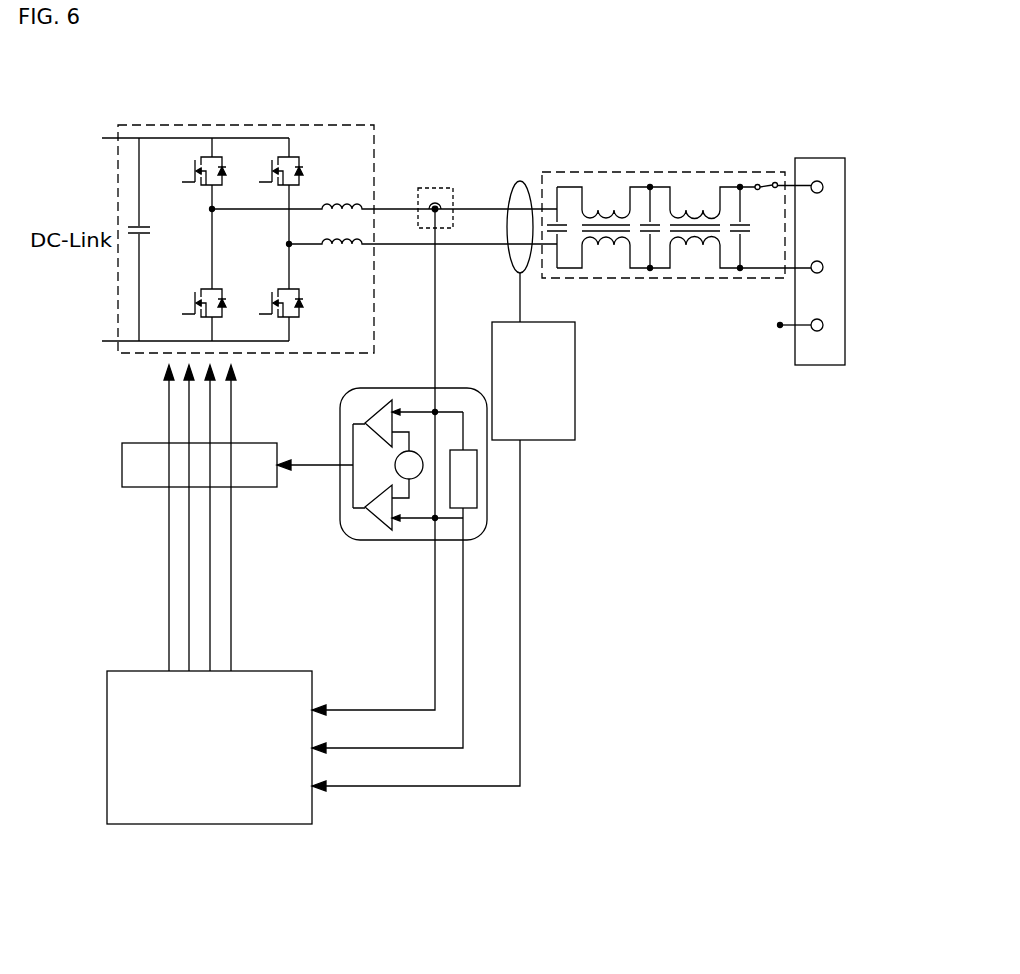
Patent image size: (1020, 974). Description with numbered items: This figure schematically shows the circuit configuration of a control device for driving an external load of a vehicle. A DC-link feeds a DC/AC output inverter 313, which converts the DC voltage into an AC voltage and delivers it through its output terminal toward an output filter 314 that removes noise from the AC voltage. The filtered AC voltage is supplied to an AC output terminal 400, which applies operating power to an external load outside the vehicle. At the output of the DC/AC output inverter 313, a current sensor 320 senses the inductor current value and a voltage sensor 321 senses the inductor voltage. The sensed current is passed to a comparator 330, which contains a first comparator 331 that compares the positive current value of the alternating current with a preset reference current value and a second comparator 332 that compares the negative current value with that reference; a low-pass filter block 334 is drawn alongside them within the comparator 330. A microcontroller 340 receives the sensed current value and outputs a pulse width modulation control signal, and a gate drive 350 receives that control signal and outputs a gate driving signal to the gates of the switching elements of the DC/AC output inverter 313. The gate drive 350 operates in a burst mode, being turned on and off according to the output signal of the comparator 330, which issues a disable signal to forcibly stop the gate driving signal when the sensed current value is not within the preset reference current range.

The DC/AC output inverter 313 is at (310, 123).
The current sensor 320 is at (445, 187).
The output filter 314 is at (663, 171).
The AC output terminal 400 is at (820, 157).
The voltage sensor 321 is at (575, 385).
The comparator 330 is at (455, 565).
The first comparator 331 is at (372, 410).
The second comparator 332 is at (375, 518).
The low pass filter 334 is at (477, 477).
The gate drive 350 is at (140, 487).
The microcontroller 340 is at (207, 824).